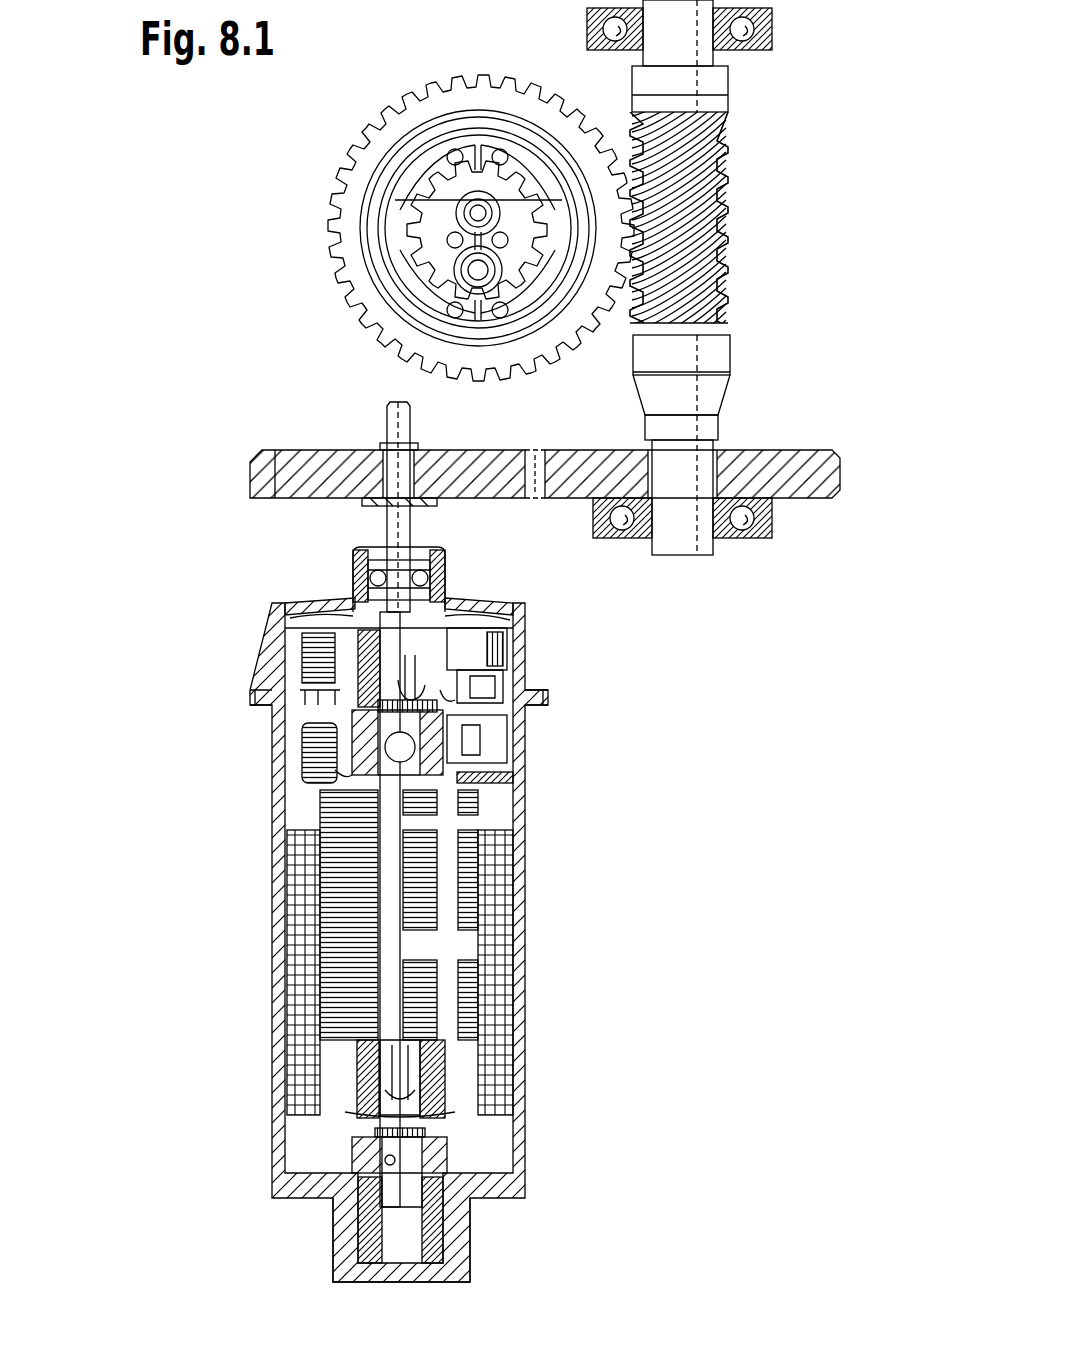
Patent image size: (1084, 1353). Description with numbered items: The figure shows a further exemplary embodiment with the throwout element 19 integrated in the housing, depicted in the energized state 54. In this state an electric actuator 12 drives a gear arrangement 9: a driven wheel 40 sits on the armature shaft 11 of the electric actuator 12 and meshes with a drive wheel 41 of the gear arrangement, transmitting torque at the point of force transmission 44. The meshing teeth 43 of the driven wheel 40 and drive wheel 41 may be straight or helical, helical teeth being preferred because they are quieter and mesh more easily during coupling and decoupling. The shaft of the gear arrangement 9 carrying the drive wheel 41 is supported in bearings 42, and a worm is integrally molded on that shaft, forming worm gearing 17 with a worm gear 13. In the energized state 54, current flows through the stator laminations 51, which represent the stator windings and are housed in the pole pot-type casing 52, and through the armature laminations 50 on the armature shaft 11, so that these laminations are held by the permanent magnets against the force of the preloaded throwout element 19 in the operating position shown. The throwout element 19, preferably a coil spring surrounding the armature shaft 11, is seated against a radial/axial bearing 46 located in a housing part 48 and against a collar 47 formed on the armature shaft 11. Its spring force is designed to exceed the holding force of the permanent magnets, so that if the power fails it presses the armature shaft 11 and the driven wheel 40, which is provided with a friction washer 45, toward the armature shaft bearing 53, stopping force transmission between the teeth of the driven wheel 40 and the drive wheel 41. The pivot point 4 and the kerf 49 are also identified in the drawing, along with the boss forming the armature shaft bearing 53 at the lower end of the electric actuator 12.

The pivot point 4 is at (430, 1138).
The gear arrangement 9 is at (776, 197).
The armature shaft 11 is at (400, 525).
The electric actuator 12 is at (409, 951).
The worm gear 13 is at (340, 195).
The worm gearing 17 is at (497, 72).
The throwout element 19 is at (292, 612).
The driven wheel 40 is at (318, 462).
The drive wheel 41 is at (768, 456).
The bearing 42 is at (770, 22).
The meshing teeth 43 is at (548, 308).
The point of force transmission 44 is at (527, 277).
The friction washer 45 is at (368, 504).
The radial/axial bearing 46 is at (445, 570).
The collar 47 is at (412, 625).
The housing part 48 is at (272, 662).
The kerf 49 is at (262, 712).
The armature lamination 50 is at (435, 858).
The stator lamination 51 is at (355, 960).
The pole pot-type casing 52 is at (515, 1110).
The armature shaft bearing 53 is at (345, 1232).
The energized state 54 is at (417, 1240).